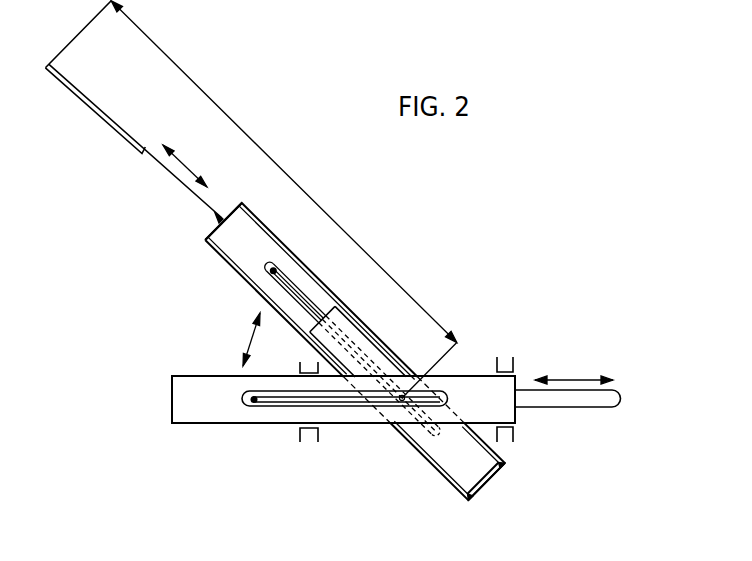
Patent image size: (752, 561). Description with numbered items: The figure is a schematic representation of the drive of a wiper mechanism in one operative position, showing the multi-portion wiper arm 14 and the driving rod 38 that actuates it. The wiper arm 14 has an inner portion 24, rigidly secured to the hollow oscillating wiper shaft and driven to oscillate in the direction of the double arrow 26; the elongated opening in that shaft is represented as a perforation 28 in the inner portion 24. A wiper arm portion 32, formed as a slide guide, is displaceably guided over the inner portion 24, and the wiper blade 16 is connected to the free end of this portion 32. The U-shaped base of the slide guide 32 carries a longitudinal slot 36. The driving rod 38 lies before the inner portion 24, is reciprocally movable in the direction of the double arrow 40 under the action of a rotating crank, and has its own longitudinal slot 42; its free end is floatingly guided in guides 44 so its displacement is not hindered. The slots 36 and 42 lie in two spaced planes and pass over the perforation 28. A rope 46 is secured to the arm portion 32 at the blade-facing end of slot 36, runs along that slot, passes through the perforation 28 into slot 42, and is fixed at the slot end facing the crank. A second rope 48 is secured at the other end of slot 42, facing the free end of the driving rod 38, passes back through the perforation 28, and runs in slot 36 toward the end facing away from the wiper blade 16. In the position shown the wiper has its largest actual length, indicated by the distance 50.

The wiper arm 14 is at (347, 307).
The wiper blade 16 is at (127, 138).
The inner portion of the wiper arm 24 is at (483, 470).
The double arrow 26 is at (245, 340).
The perforation 28 is at (402, 388).
The wiper arm portion 32 is at (228, 240).
The longitudinal slot 36 is at (283, 278).
The driving rod 38 is at (476, 376).
The double arrow 40 is at (578, 378).
The longitudinal slot 42 is at (344, 410).
The guides 44 is at (299, 364).
The rope 46 is at (300, 295).
The second rope 48 is at (265, 403).
The distance 50 is at (284, 199).